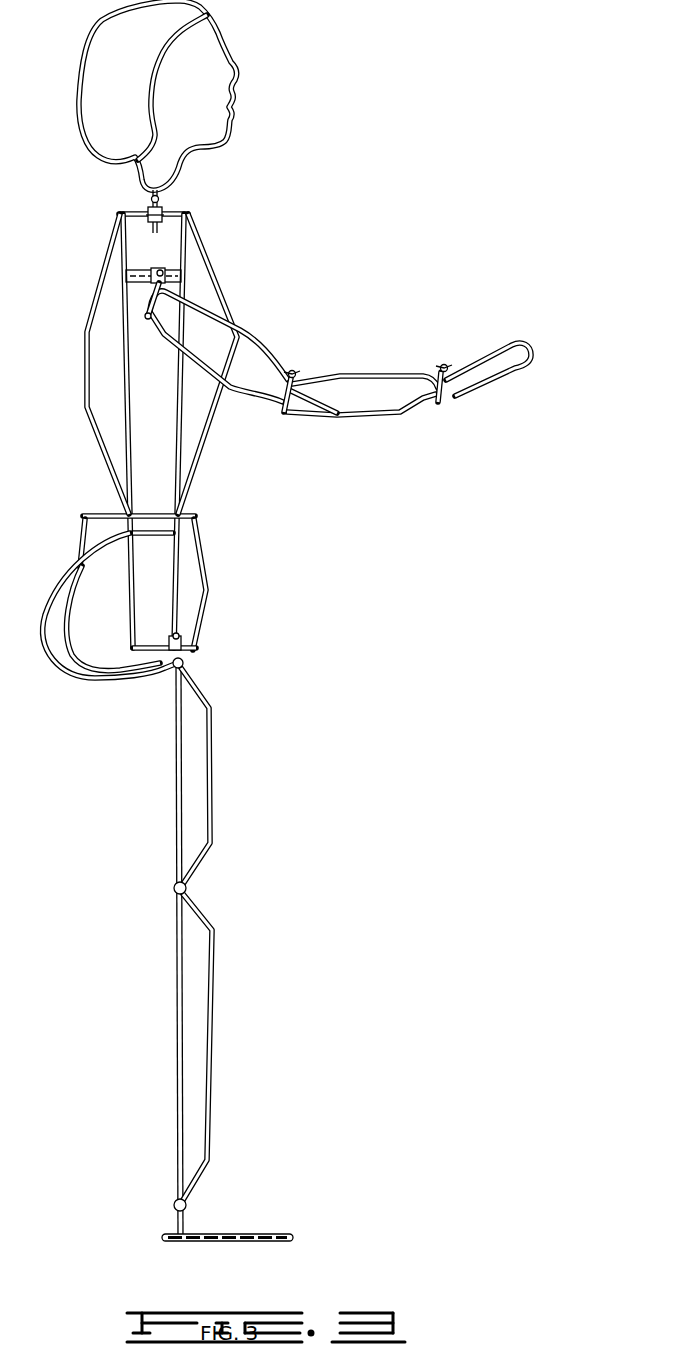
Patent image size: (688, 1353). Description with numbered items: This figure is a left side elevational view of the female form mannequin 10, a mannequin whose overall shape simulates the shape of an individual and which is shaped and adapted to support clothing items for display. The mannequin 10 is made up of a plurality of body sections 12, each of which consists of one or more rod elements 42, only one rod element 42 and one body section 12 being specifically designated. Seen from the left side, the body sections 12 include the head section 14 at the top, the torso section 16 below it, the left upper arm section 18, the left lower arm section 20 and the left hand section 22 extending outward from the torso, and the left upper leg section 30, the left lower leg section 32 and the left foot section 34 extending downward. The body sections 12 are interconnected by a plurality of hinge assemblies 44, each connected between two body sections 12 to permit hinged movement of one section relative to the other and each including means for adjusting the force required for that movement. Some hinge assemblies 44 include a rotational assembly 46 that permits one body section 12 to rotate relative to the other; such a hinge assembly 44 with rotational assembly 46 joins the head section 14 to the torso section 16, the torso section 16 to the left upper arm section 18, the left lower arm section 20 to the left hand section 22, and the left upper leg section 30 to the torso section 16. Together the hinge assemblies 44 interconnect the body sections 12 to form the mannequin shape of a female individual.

The mannequin 10 is at (281, 621).
The body section 12 is at (147, 446).
The head section 14 is at (238, 60).
The torso section 16 is at (97, 282).
The left upper arm section 18 is at (262, 347).
The left lower arm section 20 is at (371, 373).
The left hand section 22 is at (488, 353).
The left upper leg section 30 is at (226, 951).
The left lower leg section 32 is at (214, 1035).
The left foot section 34 is at (237, 1231).
The rod element 42 is at (213, 792).
The hinge assembly 44 is at (150, 196).
The rotational assembly 46 is at (161, 212).